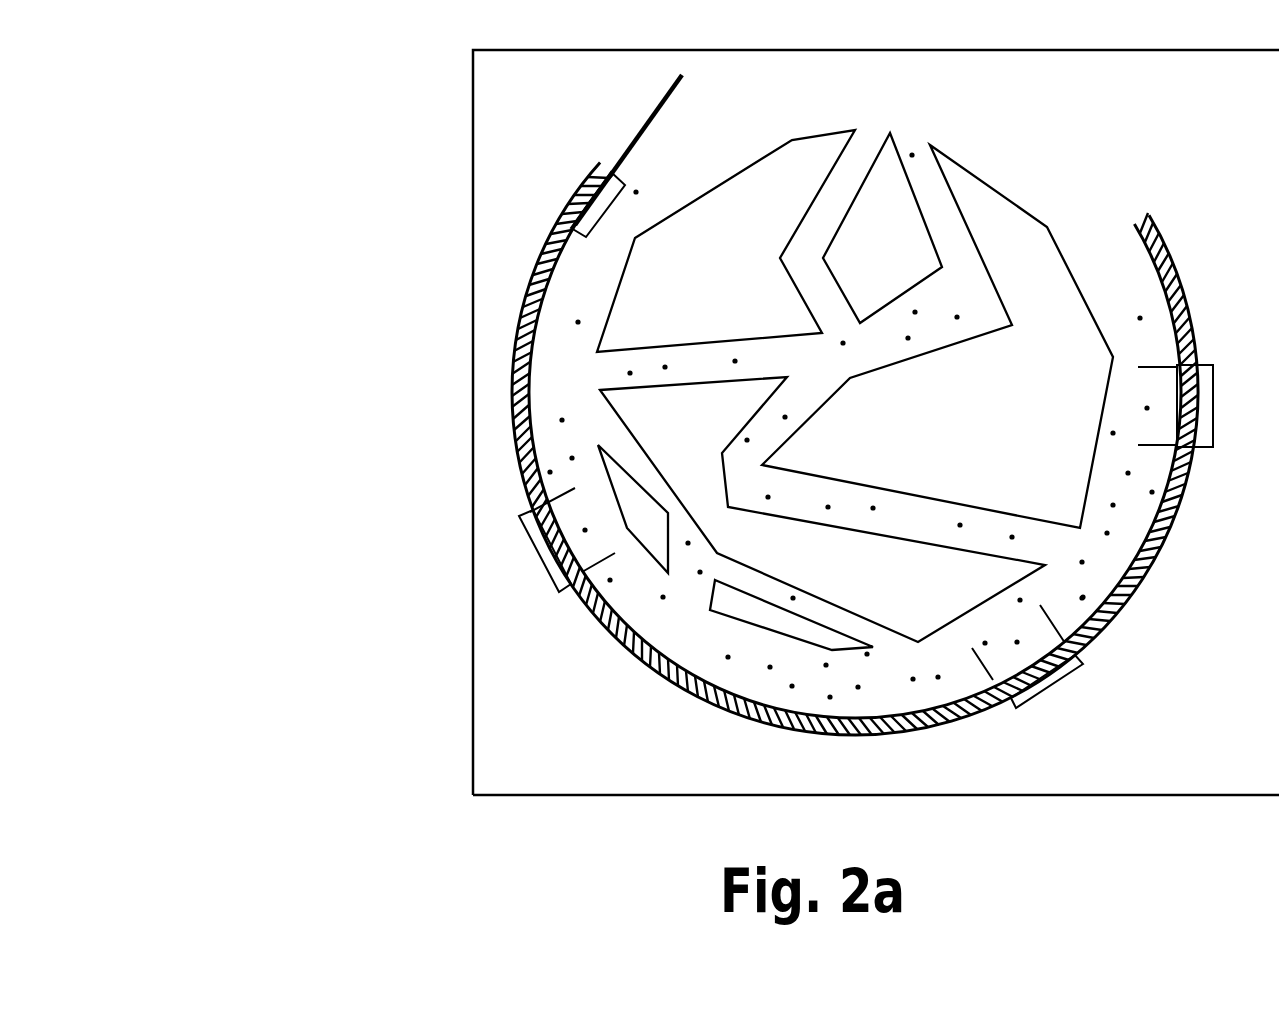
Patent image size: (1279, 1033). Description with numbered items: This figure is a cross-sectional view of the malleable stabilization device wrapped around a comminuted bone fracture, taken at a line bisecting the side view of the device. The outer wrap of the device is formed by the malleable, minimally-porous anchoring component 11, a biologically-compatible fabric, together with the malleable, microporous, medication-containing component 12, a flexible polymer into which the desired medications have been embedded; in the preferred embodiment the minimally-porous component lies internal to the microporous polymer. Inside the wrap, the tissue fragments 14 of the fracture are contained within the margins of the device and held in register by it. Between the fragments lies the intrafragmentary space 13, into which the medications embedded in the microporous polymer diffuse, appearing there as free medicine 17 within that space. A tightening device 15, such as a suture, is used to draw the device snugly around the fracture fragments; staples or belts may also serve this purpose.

The malleable minimally-porous anchoring component 11 is at (533, 268).
The malleable microporous medication-containing component 12 is at (682, 74).
The intrafragmentary space 13 is at (590, 372).
The tissue fragment 14 is at (665, 295).
The tightening device 15 is at (517, 522).
The free medicine within the intrafragmentary space 17 is at (680, 628).